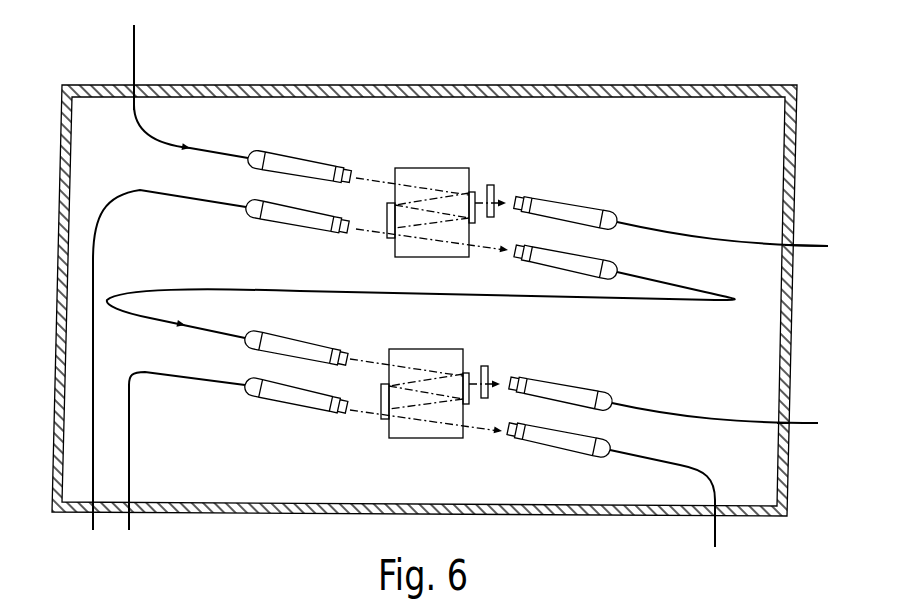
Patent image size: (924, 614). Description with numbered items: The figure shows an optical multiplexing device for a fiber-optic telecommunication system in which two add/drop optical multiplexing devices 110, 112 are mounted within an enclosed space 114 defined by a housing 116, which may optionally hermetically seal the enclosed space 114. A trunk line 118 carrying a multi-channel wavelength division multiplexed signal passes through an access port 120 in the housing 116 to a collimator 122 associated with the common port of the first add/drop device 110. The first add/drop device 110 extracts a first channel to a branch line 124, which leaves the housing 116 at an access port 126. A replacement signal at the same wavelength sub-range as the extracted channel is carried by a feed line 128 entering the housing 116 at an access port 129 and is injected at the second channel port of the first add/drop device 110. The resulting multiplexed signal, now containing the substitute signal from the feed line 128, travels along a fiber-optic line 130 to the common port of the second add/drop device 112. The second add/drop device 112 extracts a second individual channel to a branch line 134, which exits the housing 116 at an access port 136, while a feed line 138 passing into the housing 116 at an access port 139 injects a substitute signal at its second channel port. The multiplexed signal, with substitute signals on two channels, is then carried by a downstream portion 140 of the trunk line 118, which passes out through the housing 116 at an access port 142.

The first add/drop device 110 is at (430, 166).
The add/drop device 112 is at (468, 348).
The enclosed space 114 is at (655, 173).
The housing 116 is at (795, 140).
The trunk line 118 is at (134, 42).
The access port 120 is at (135, 82).
The collimator 122 is at (297, 152).
The branch line 124 is at (650, 226).
The access port 126 is at (792, 245).
The feed line 128 is at (97, 232).
The access port 129 is at (93, 502).
The fiber-optic line 130 is at (300, 288).
The branch line 134 is at (810, 424).
The access port 136 is at (788, 428).
The feed line 138 is at (130, 520).
The access port 139 is at (130, 503).
The downstream portion 140 is at (715, 533).
The access port 142 is at (715, 505).